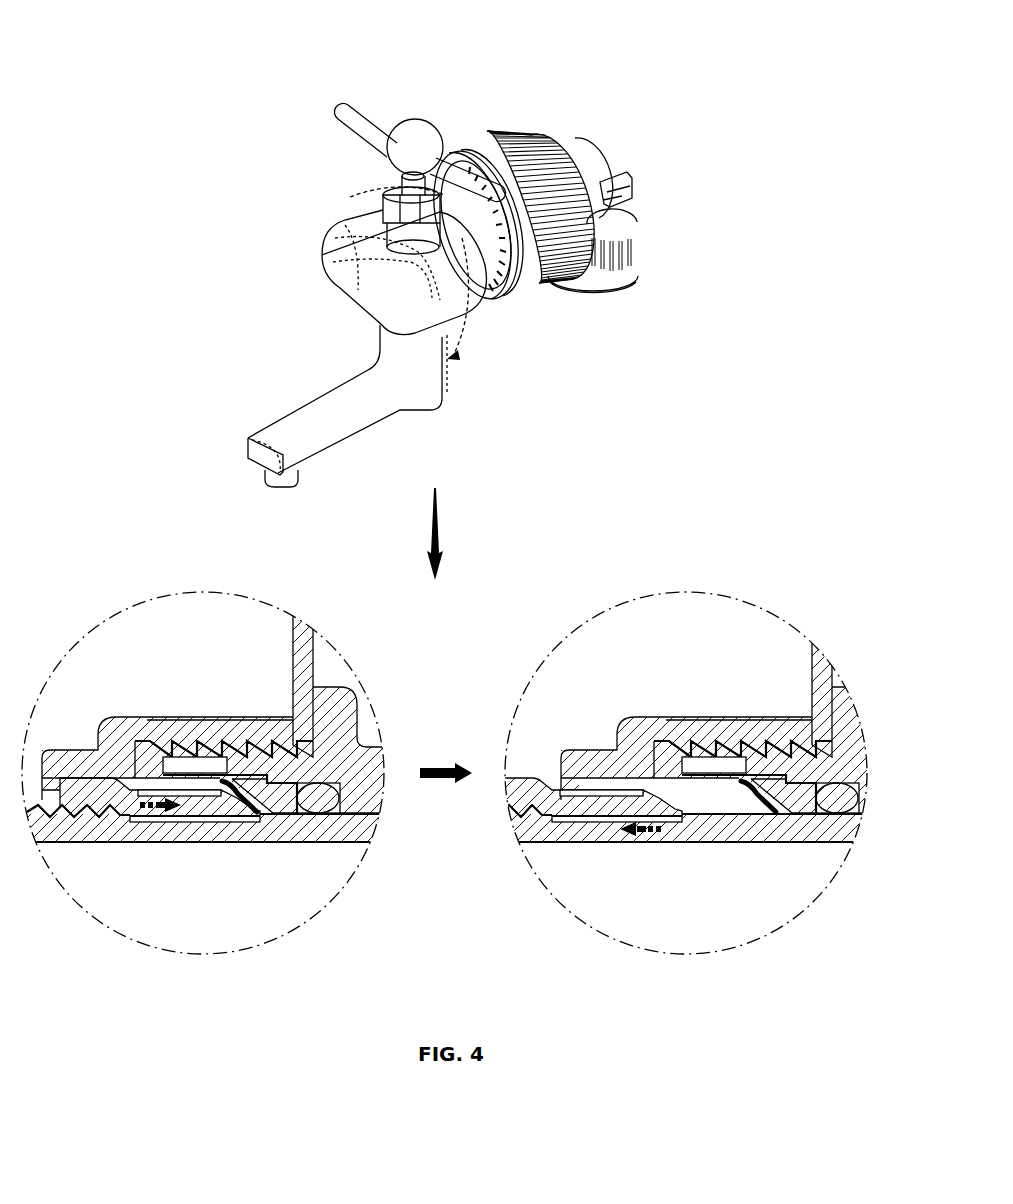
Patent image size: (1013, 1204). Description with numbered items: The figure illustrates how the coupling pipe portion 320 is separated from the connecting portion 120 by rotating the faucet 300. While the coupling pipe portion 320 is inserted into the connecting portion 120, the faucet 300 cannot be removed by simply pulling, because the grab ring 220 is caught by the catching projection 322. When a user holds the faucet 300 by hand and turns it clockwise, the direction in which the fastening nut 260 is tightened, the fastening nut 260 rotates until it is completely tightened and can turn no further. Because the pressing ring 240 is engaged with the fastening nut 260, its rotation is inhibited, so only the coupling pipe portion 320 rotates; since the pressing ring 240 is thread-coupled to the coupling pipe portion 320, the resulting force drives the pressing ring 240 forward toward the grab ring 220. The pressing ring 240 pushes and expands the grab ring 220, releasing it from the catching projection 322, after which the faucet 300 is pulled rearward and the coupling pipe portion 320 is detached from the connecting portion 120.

The connecting portion 120 is at (238, 765).
The grab ring 220 is at (253, 822).
The pressing ring 240 is at (190, 808).
The fastening nut 260 is at (486, 128).
The faucet 300 is at (332, 232).
The coupling pipe portion 320 is at (120, 840).
The catching projection 322 is at (262, 815).